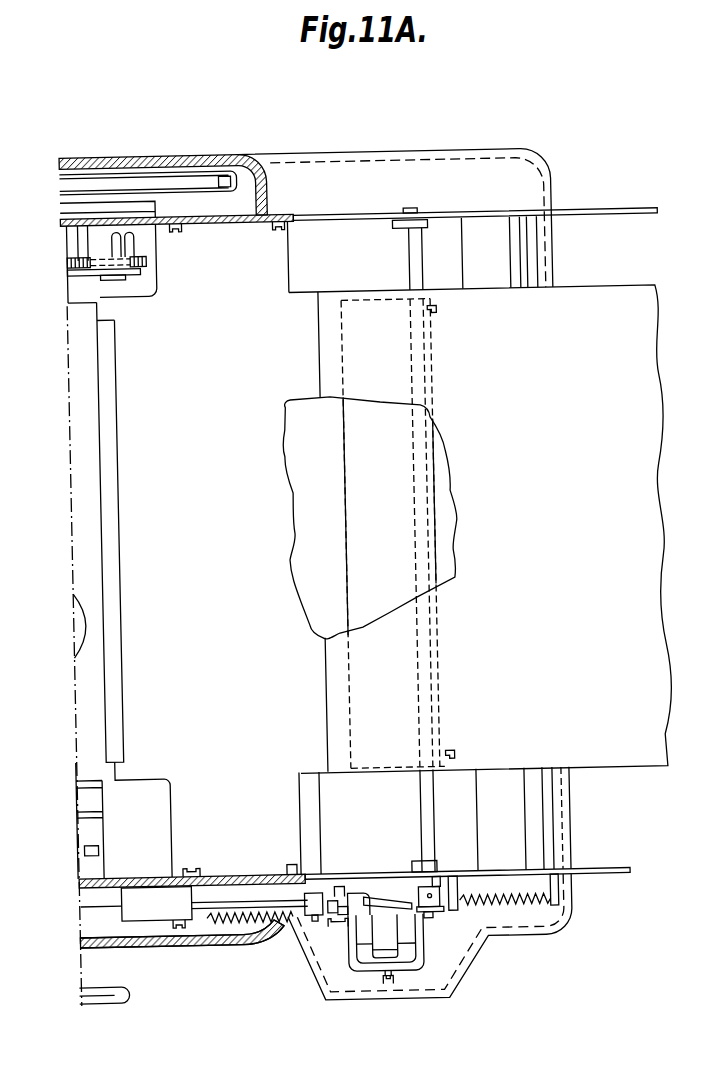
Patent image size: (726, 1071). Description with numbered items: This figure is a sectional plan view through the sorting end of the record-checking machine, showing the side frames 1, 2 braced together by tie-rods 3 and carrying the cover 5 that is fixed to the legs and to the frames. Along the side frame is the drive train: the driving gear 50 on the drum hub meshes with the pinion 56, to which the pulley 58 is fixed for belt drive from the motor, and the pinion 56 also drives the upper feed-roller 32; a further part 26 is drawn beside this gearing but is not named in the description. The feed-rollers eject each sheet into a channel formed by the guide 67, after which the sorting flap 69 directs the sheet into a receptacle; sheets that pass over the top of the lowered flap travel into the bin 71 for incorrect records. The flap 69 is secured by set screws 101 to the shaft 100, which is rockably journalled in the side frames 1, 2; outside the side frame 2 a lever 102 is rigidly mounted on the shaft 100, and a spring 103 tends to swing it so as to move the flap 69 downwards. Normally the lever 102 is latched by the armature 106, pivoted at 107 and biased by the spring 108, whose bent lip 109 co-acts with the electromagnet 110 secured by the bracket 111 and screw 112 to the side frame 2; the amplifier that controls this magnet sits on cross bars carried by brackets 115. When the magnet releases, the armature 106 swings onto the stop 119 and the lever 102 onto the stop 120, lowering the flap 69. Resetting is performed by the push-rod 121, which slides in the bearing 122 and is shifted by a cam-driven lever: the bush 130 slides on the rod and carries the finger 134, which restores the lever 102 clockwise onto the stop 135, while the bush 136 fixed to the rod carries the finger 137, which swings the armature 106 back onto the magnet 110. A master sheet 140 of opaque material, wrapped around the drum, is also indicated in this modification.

The side frame 1 is at (569, 214).
The side frame 2 is at (576, 873).
The tie-rods 3 is at (553, 262).
The cover 5 is at (305, 159).
The bracket 26 is at (146, 268).
The upper feed-roller 32 is at (105, 589).
The driving gear 50 is at (84, 264).
The pinion 56 is at (152, 253).
The pulley 58 is at (88, 174).
The guide 67 is at (178, 462).
The sorting flap 69 is at (340, 500).
The receptacle 71 is at (588, 496).
The shaft 100 is at (413, 251).
The set screws 101 is at (441, 314).
The lever 102 is at (433, 911).
The spring 103 is at (526, 907).
The armature 106 is at (376, 918).
The pivot 107 is at (372, 920).
The spring 108 is at (237, 920).
The lip 109 is at (374, 940).
The electromagnet 110 is at (382, 953).
The bracket 111 is at (351, 965).
The screw 112 is at (378, 984).
The brackets 115 is at (481, 237).
The stop 119 is at (322, 893).
The stop 120 is at (446, 887).
The push-rod 121 is at (192, 909).
The bearing 122 is at (147, 901).
The bush 130 is at (350, 893).
The finger 134 is at (382, 900).
The stop 135 is at (430, 882).
The bush 136 is at (303, 893).
The finger 137 is at (329, 921).
The master sheet 140 is at (90, 416).